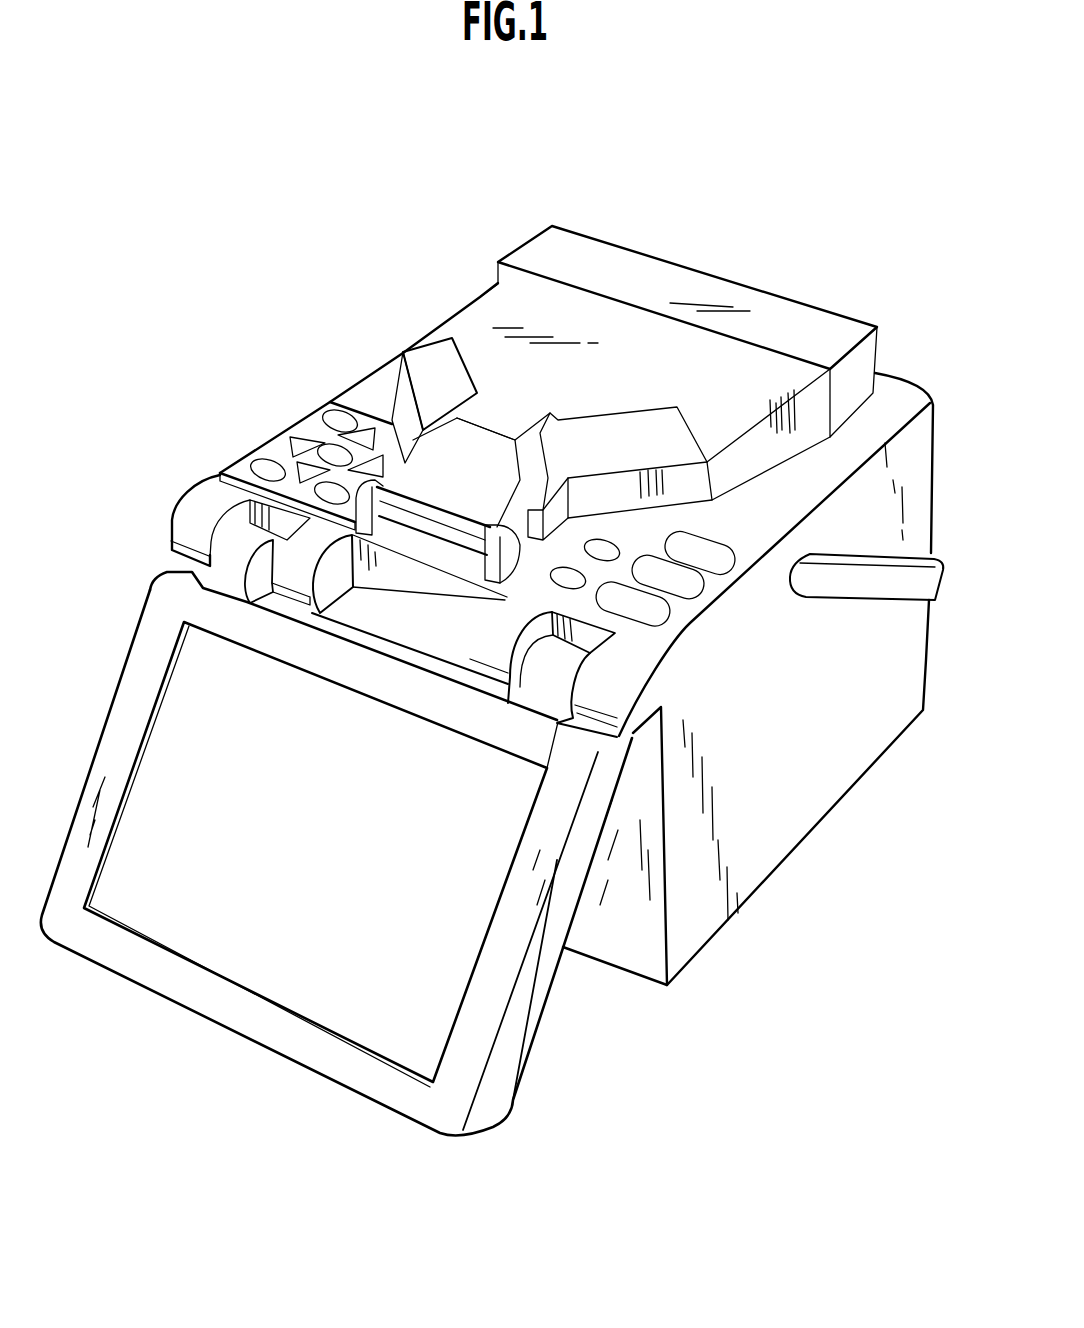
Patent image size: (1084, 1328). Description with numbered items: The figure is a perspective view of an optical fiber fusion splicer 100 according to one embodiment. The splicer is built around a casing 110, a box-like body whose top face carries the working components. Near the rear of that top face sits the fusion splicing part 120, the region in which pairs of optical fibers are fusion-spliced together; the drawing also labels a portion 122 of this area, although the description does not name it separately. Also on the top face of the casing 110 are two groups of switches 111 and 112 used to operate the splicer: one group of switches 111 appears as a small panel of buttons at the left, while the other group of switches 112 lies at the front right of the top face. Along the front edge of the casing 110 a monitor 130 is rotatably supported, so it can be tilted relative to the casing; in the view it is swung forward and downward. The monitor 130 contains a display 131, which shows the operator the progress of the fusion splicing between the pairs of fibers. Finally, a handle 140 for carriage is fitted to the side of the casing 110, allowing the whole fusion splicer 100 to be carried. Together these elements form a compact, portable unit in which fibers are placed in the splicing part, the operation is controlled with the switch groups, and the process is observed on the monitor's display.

The optical fiber fusion splicer 100 is at (615, 168).
The casing 110 is at (895, 402).
The group of switches 111 is at (264, 420).
The group of switches 112 is at (702, 631).
The fusion splicing part 120 is at (442, 300).
The windshield cover 122 is at (423, 335).
The monitor 130 is at (375, 1042).
The display 131 is at (278, 937).
The handle 140 is at (848, 590).